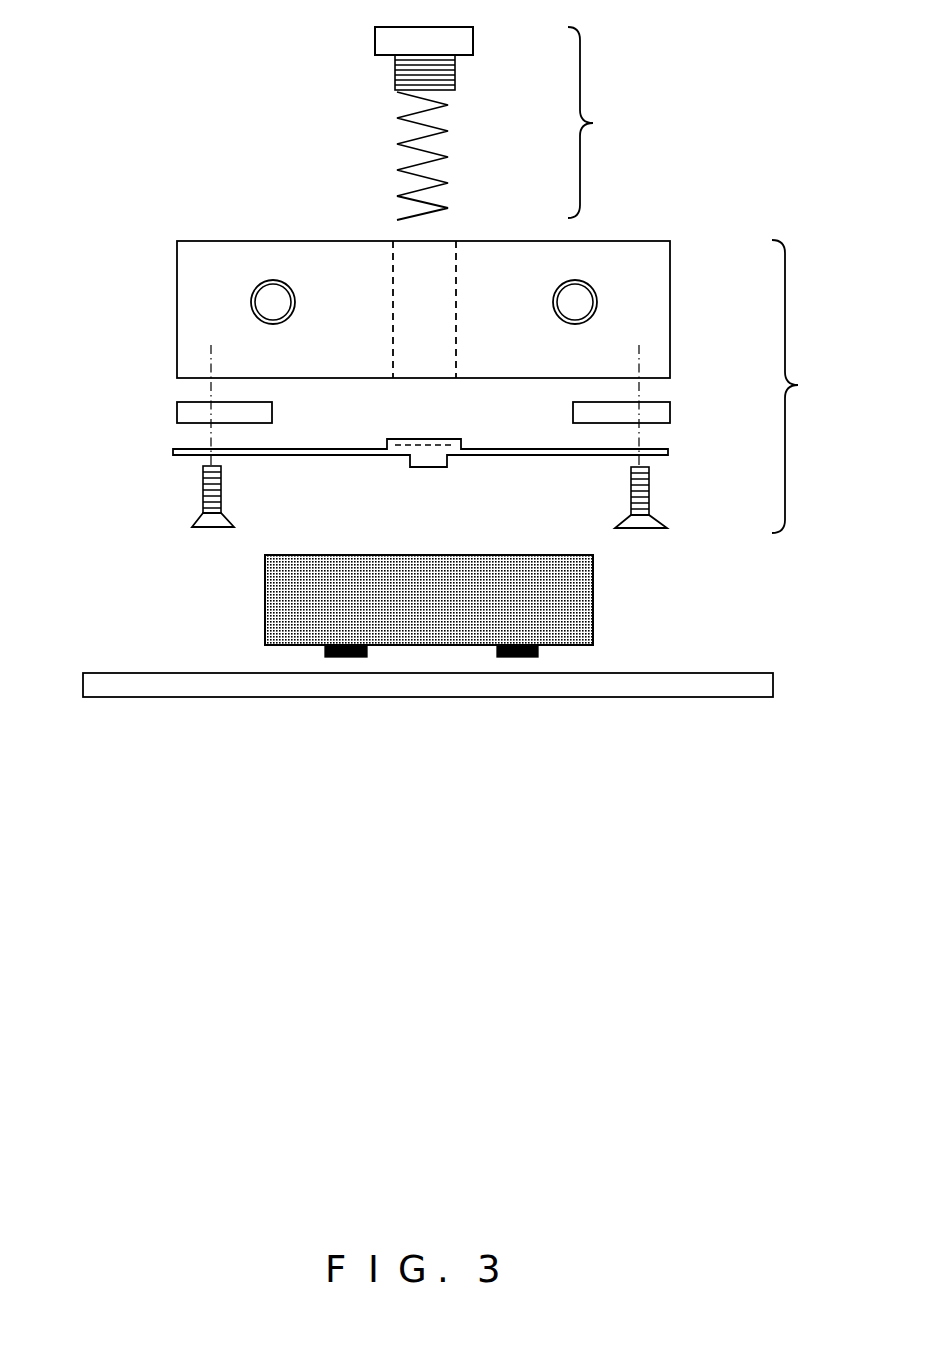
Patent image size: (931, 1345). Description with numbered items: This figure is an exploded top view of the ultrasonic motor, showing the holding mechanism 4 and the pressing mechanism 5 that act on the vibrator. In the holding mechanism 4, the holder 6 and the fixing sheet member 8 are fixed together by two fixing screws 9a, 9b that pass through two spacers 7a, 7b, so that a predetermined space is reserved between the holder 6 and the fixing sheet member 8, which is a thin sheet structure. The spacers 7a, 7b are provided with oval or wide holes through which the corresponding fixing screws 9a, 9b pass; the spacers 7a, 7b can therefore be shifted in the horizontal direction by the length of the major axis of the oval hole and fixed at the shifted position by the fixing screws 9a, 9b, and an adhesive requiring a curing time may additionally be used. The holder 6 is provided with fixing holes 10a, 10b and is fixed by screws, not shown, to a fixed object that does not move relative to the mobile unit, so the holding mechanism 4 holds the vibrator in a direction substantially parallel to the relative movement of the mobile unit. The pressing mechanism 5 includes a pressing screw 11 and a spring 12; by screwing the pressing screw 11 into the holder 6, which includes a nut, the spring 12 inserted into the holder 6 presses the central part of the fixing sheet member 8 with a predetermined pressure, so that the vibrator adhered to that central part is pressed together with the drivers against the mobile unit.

The holding mechanism 4 is at (800, 386).
The pressing mechanism 5 is at (596, 122).
The holder 6 is at (670, 295).
The spacer 7a is at (670, 410).
The spacer 7b is at (177, 410).
The fixing sheet member 8 is at (668, 452).
The fixing screw 9a is at (667, 525).
The fixing screw 9b is at (195, 520).
The fixing hole 10a is at (582, 283).
The fixing hole 10b is at (261, 283).
The pressing screw 11 is at (473, 40).
The spring 12 is at (438, 184).